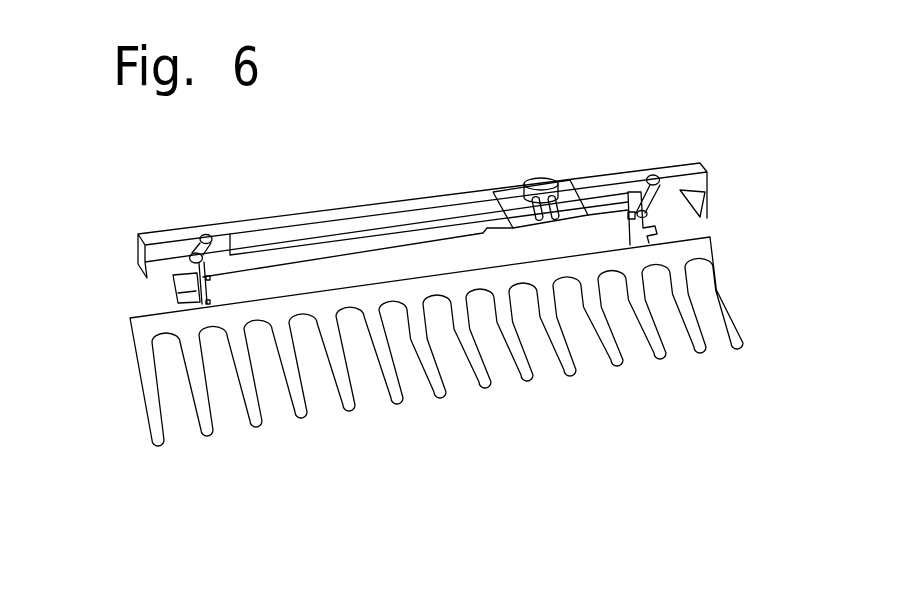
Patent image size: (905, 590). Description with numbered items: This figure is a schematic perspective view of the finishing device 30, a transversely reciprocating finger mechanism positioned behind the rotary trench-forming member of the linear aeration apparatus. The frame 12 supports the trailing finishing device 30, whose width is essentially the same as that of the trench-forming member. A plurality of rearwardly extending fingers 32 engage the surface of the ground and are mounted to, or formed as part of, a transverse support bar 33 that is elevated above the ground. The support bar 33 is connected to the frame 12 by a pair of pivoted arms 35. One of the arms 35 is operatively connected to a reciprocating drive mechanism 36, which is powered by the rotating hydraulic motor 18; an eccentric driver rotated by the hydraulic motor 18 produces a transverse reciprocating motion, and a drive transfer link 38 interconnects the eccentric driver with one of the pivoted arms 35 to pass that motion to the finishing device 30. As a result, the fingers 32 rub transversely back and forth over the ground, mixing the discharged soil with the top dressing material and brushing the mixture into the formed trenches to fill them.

The finishing device 30 is at (488, 122).
The frame 12 is at (248, 217).
The reciprocating drive mechanism 36 is at (498, 180).
The hydraulic motor 18 is at (545, 176).
The pivoted arms 35 is at (192, 262).
The transverse support bar 33 is at (461, 397).
The drive transfer link 38 is at (390, 245).
The fingers 32 is at (200, 428).